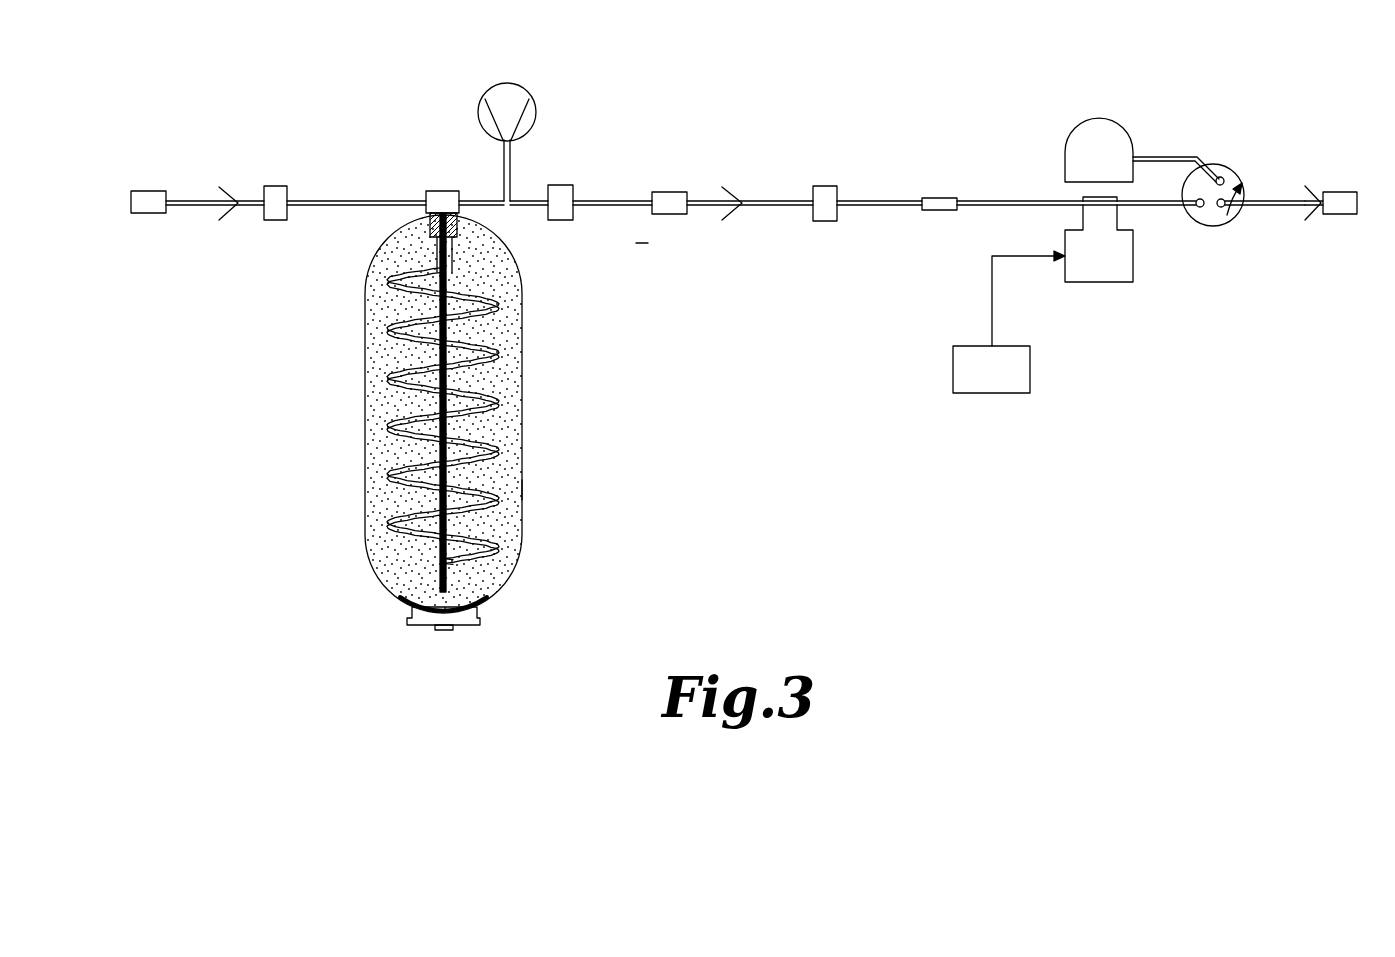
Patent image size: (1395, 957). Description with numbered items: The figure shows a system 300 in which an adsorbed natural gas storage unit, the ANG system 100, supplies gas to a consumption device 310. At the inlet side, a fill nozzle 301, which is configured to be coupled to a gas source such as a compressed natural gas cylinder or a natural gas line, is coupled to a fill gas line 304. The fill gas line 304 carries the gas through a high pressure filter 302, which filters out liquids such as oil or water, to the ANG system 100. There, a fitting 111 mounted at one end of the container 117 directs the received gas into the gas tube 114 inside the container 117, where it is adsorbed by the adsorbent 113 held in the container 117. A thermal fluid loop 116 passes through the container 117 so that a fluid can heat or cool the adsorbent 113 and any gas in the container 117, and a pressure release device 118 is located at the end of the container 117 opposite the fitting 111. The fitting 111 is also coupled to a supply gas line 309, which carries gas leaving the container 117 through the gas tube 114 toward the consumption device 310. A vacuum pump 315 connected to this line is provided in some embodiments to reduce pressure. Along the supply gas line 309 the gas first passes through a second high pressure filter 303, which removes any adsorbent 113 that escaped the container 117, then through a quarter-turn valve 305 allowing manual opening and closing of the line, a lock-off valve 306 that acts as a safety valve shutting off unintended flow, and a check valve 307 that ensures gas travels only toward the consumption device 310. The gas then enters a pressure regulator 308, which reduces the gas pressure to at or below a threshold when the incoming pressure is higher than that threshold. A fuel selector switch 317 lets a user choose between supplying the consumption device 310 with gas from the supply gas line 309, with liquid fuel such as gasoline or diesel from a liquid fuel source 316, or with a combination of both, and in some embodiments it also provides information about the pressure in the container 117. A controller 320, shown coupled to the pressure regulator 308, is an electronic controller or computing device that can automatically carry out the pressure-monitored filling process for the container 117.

The system 300 is at (390, 92).
The fill nozzle 301 is at (152, 191).
The fill gas line 304 is at (210, 200).
The high pressure filter 302 is at (278, 186).
The fitting 111 is at (441, 191).
The vacuum pump 315 is at (521, 88).
The high pressure filter 303 is at (558, 185).
The supply gas line 309 is at (622, 201).
The quarter-turn valve 305 is at (668, 192).
The lock-off valve 306 is at (825, 186).
The check valve 307 is at (940, 198).
The pressure regulator 308 is at (1133, 268).
The liquid fuel source 316 is at (1127, 128).
The fuel selector switch 317 is at (1215, 166).
The consumption device 310 is at (1341, 192).
The controller 320 is at (1030, 370).
The ANG system 100 is at (343, 396).
The gas tube 114 is at (500, 333).
The thermal fluid loop 116 is at (503, 355).
The adsorbent 113 is at (510, 428).
The container 117 is at (523, 490).
The pressure release device 118 is at (480, 622).